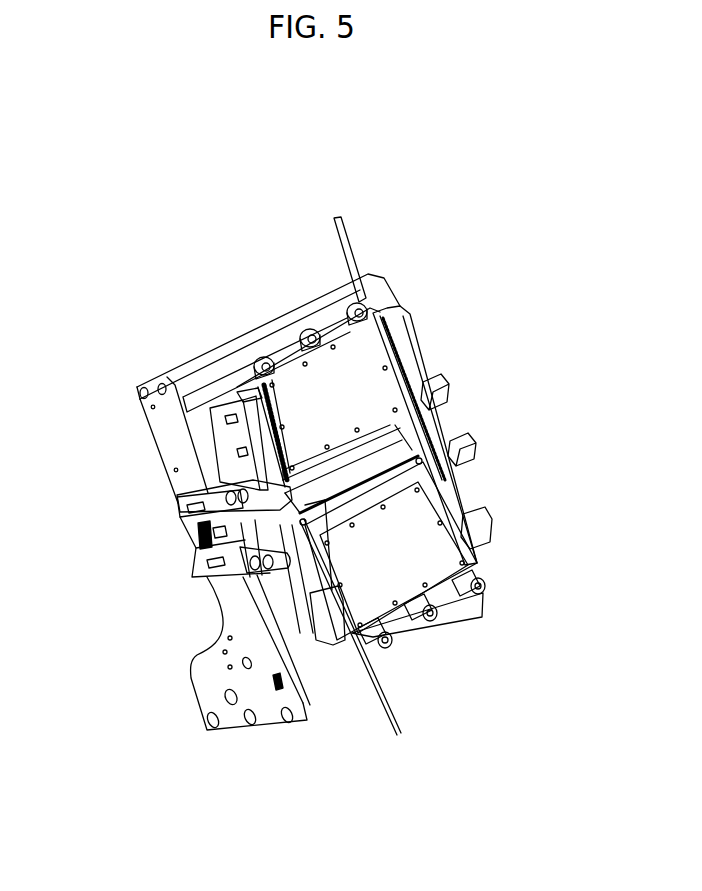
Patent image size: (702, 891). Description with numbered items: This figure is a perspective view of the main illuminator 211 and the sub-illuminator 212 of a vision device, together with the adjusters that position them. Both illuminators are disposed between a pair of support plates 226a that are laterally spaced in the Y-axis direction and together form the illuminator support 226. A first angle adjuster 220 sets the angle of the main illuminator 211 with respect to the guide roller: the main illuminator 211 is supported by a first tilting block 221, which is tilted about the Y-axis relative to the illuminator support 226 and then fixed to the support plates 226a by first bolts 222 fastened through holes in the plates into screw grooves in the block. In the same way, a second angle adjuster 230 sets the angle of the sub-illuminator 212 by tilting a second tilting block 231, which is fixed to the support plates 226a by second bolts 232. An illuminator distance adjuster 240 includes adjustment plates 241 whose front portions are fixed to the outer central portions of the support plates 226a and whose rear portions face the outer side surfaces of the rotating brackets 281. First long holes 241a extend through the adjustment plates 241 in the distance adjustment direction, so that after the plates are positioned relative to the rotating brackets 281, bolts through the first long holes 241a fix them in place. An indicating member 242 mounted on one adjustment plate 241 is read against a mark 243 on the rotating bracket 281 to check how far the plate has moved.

The main illuminator 211 is at (300, 530).
The sub-illuminator 212 is at (320, 467).
The first angle adjuster 220 is at (298, 651).
The first tilting block 221 is at (320, 610).
The first bolts 222 is at (300, 600).
The illuminator support 226 is at (474, 435).
The support plates 226a is at (410, 363).
The second angle adjuster 230 is at (168, 450).
The second tilting block 231 is at (245, 492).
The second bolts 232 is at (288, 497).
The illuminator distance adjuster 240 is at (188, 544).
The adjustment plates 241 is at (200, 552).
The first long holes 241a is at (178, 502).
The indicating member 242 is at (232, 560).
The mark 243 is at (196, 528).
The rotating brackets 281 is at (205, 687).